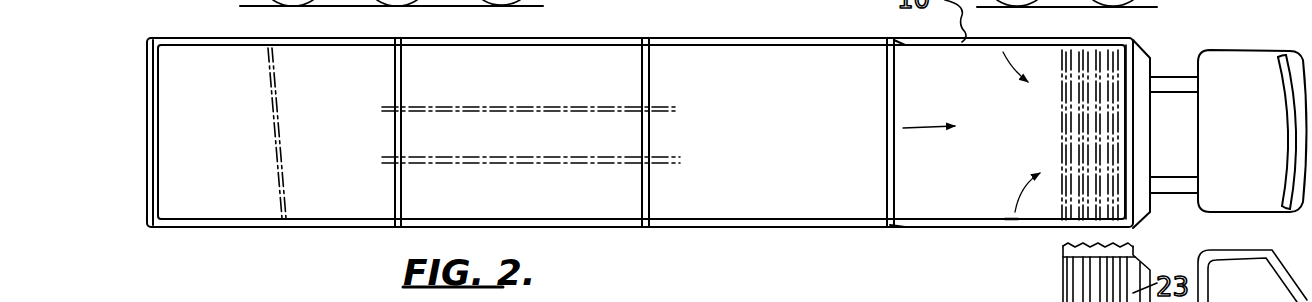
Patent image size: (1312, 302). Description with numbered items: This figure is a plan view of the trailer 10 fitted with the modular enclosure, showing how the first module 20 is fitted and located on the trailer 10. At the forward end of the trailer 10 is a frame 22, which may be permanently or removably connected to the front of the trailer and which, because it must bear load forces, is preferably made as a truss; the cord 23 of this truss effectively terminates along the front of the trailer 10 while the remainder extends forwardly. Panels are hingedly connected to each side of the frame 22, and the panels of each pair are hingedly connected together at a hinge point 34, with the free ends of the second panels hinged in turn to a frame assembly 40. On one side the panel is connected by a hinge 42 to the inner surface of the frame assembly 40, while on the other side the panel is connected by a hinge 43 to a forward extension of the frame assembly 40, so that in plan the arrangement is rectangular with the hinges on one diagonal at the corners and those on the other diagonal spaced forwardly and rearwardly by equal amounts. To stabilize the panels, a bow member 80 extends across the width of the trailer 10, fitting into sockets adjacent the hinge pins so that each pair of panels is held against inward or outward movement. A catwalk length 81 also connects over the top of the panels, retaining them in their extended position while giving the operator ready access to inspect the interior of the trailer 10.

The trailer 10 is at (805, 235).
The first module 20 is at (1013, 235).
The frame 22 is at (1162, 62).
The cord 23 is at (1130, 125).
The hinge connection 34 is at (1010, 222).
The frame assembly 40 is at (888, 117).
The hinge 42 is at (898, 45).
The hinge 43 is at (898, 230).
The bow member 80 is at (282, 137).
The catwalk length 81 is at (507, 155).